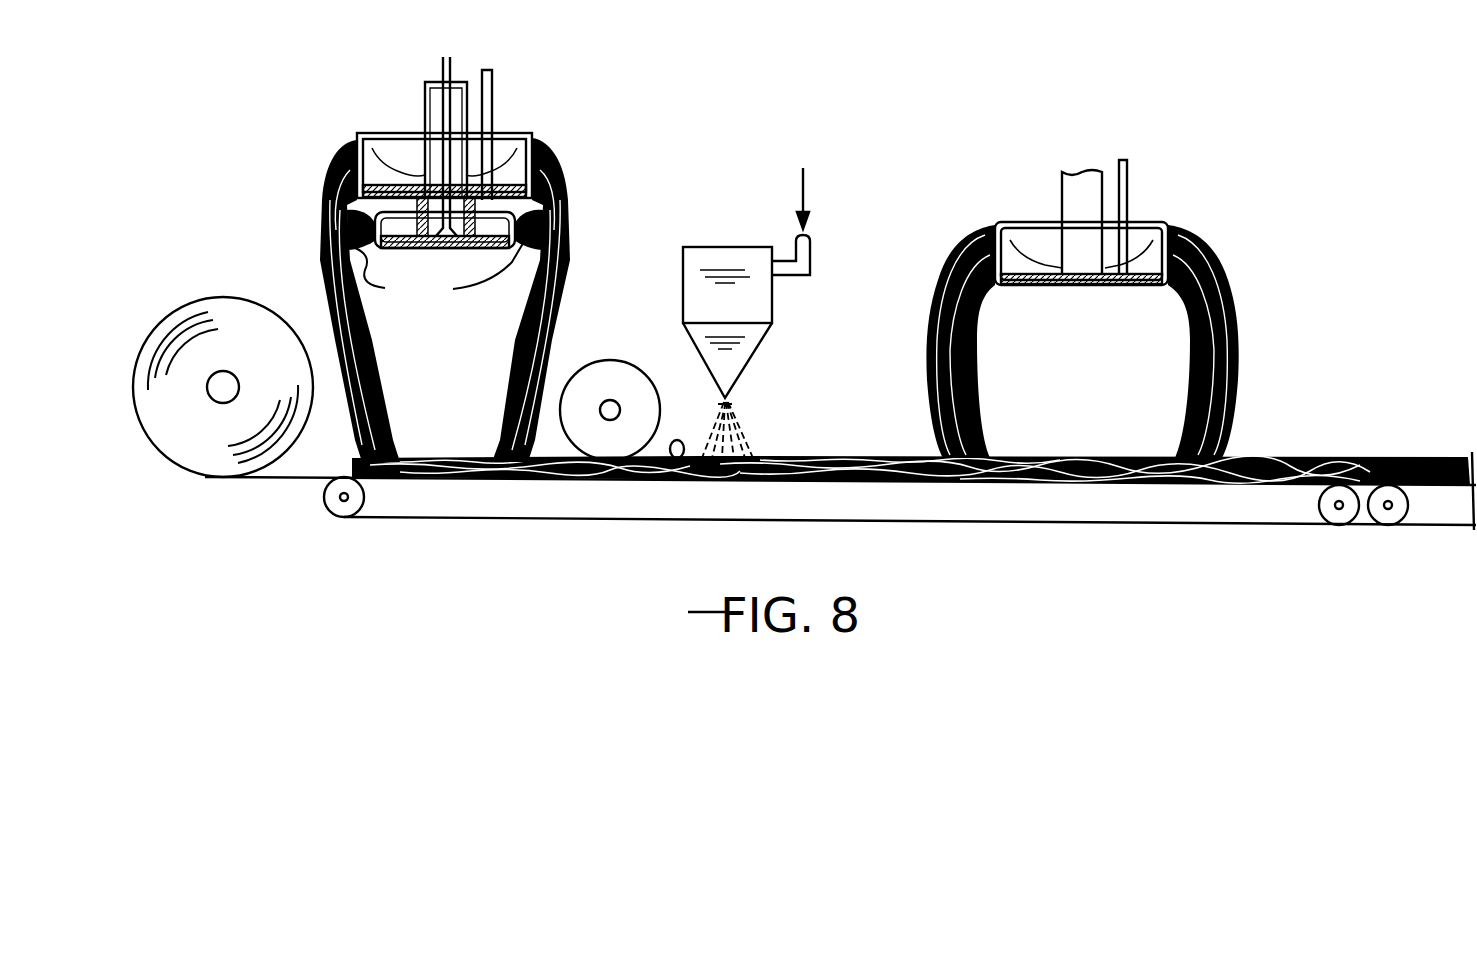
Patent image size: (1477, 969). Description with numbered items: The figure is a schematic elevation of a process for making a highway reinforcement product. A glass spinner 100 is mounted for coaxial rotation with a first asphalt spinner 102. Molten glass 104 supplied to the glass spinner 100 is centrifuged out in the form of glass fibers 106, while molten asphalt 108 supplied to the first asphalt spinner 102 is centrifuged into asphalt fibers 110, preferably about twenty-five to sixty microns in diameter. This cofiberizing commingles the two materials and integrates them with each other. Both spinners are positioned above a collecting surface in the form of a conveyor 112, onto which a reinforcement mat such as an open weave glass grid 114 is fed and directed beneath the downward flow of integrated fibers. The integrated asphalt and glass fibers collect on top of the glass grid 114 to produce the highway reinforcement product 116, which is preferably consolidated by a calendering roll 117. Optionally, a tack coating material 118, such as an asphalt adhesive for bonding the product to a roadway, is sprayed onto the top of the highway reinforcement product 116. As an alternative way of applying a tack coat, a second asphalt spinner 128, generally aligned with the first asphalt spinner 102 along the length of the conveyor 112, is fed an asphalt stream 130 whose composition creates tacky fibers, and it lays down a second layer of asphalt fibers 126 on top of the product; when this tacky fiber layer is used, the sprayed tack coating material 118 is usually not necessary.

The glass spinner 100 is at (532, 138).
The first asphalt spinner 102 is at (515, 222).
The molten glass 104 is at (492, 97).
The glass fibers 106 is at (322, 181).
The molten asphalt 108 is at (440, 73).
The asphalt fibers 110 is at (441, 269).
The conveyor 112 is at (463, 517).
The open weave glass grid 114 is at (205, 298).
The highway reinforcement product 116 is at (683, 479).
The calendering roll 117 is at (592, 360).
The tack coating material 118 is at (738, 432).
The second layer of asphalt fibers 126 is at (1190, 350).
The second asphalt spinner 128 is at (1168, 228).
The asphalt stream 130 is at (1128, 192).